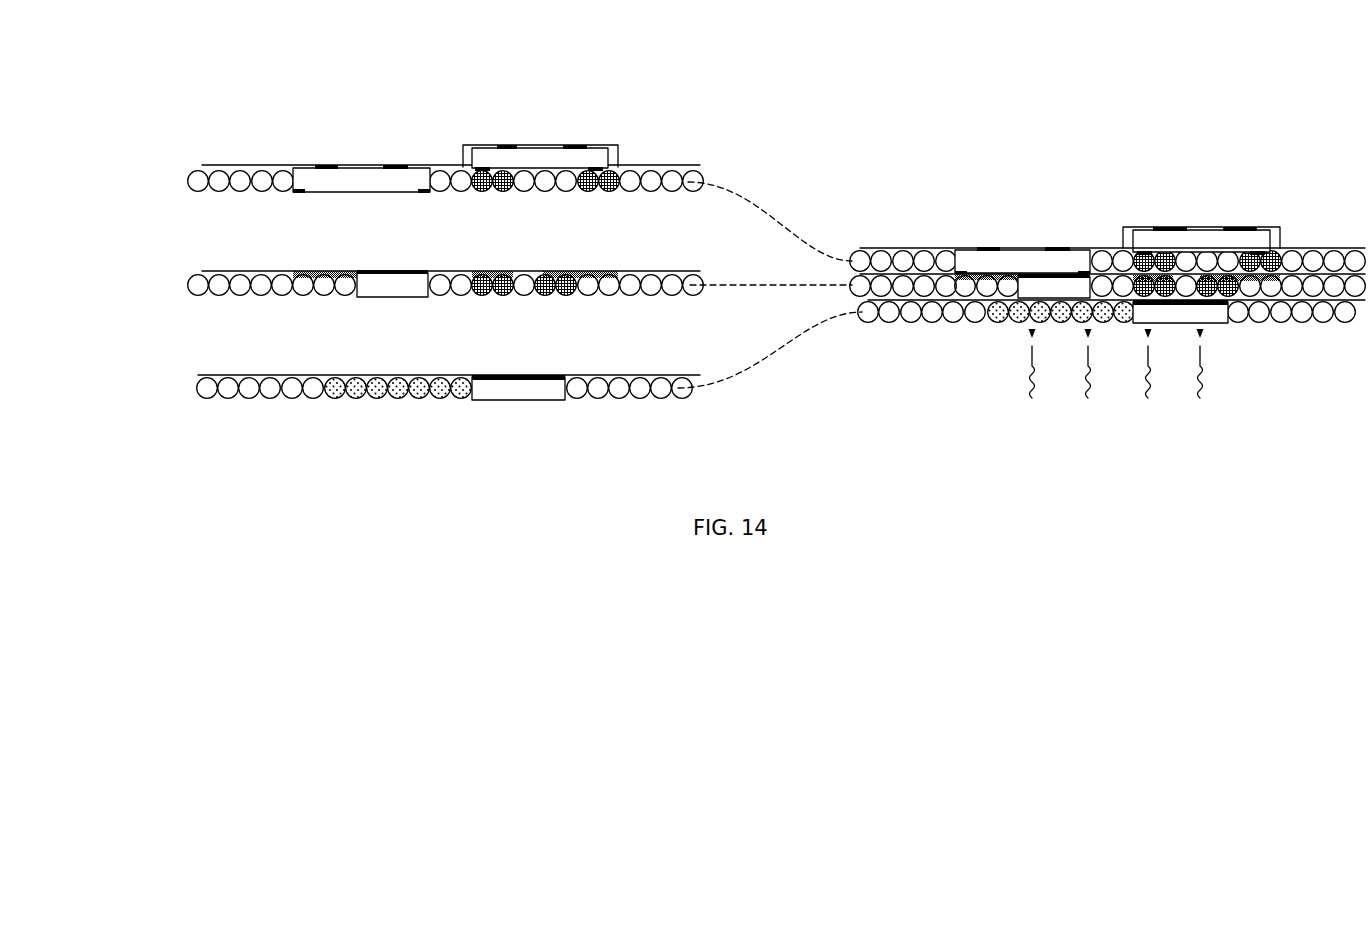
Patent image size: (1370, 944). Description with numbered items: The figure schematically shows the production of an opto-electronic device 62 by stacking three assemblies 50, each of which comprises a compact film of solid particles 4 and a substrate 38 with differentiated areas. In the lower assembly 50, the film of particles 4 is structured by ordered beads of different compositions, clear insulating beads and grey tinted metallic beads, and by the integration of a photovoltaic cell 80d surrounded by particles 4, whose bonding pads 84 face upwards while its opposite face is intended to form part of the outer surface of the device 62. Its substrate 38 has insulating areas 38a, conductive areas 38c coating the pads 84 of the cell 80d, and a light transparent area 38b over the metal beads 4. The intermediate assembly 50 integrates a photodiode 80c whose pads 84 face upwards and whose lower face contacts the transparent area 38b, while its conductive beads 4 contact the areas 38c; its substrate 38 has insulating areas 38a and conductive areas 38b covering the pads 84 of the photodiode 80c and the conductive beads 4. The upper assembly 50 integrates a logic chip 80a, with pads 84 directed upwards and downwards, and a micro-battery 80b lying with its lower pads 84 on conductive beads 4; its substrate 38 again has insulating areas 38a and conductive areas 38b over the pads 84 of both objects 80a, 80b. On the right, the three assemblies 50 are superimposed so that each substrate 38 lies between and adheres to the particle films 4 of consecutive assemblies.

The solid particles 4 is at (540, 192).
The substrate 38 is at (204, 158).
The electrically insulating area 38a is at (228, 165).
The intermediate area 38b is at (330, 165).
The electrically conductive area 38c is at (544, 400).
The assembly 50 is at (182, 168).
The opto-electronic device 62 is at (414, 88).
The logic chip 80a is at (370, 185).
The micro-battery 80b is at (547, 160).
The photodiode 80c is at (396, 286).
The photovoltaic cell 80d is at (515, 400).
The bonding pads 84 is at (300, 190).